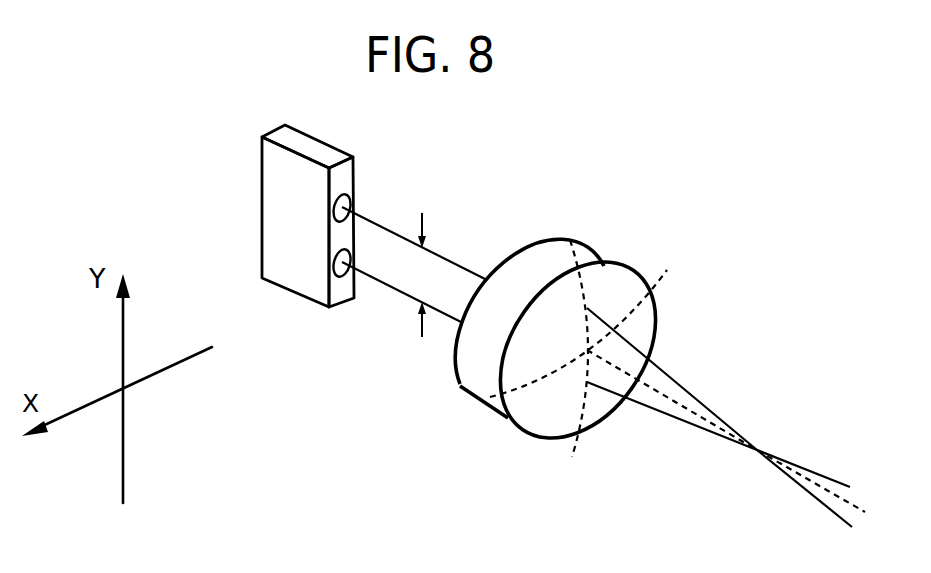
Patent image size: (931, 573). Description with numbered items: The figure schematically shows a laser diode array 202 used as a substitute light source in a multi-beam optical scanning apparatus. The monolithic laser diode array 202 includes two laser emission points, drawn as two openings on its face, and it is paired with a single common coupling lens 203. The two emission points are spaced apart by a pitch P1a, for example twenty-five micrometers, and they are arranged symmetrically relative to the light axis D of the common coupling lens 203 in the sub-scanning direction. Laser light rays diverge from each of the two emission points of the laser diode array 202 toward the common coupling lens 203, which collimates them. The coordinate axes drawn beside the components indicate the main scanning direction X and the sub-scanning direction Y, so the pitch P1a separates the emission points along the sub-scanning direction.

The monolithic laser diode array 202 is at (273, 203).
The common coupling lens 203 is at (470, 378).
The pitch P1a is at (423, 262).
The light axis D is at (667, 395).